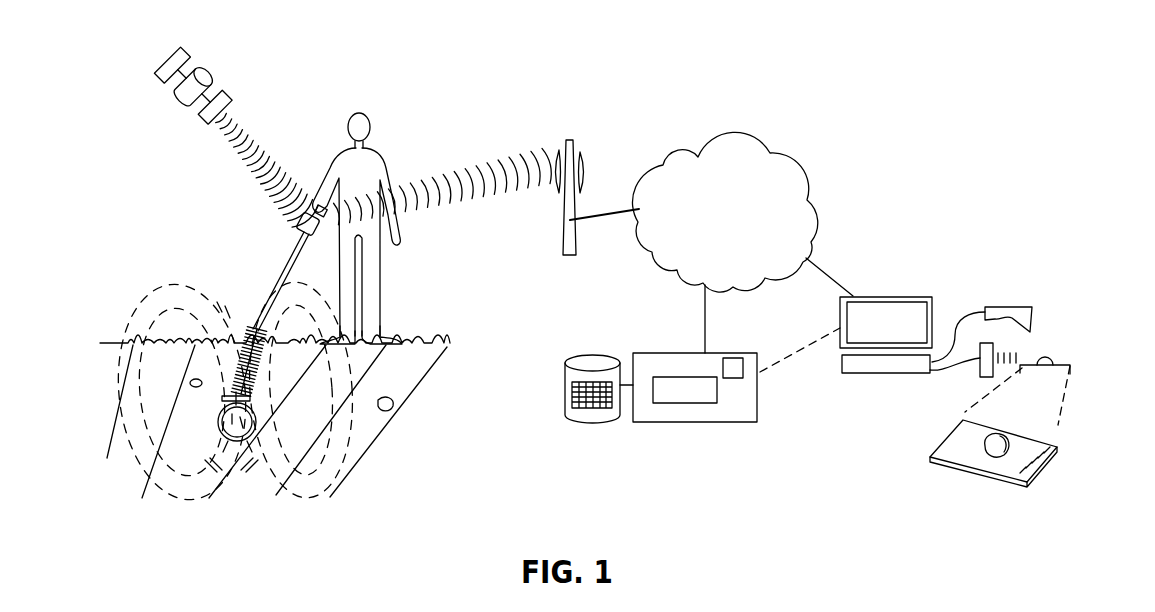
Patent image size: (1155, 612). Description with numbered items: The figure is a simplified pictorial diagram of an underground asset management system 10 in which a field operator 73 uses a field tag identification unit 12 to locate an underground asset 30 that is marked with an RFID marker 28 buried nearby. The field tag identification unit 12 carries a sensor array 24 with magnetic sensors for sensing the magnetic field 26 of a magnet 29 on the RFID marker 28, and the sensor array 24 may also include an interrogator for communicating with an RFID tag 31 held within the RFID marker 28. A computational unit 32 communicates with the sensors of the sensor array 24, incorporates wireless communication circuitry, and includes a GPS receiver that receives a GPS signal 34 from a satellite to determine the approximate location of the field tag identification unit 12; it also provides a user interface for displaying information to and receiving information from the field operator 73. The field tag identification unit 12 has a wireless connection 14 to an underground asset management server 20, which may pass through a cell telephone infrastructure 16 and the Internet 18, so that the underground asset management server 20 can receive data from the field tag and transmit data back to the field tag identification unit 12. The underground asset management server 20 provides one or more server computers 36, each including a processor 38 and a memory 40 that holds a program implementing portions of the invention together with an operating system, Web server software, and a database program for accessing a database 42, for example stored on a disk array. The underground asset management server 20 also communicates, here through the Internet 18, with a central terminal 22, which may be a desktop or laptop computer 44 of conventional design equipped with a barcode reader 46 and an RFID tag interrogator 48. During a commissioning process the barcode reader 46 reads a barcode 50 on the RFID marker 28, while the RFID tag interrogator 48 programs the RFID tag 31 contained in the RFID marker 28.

The underground asset management system 10 is at (800, 133).
The field tag identification unit 12 is at (290, 252).
The wireless connection 14 is at (452, 182).
The cell telephone infrastructure 16 is at (571, 142).
The Internet 18 is at (706, 229).
The underground asset management server 20 is at (566, 445).
The central terminal 22 is at (943, 259).
The sensor array 24 is at (296, 289).
The magnetic field 26 is at (167, 300).
The RFID marker 28 is at (222, 398).
The magnet 29 is at (987, 452).
The underground asset 30 is at (218, 430).
The RFID tag 31 is at (1000, 489).
The computational unit 32 is at (294, 225).
The GPS signal 34 is at (257, 138).
The server computer 36 is at (735, 410).
The processor 38 is at (738, 360).
The memory 40 is at (667, 397).
The database 42 is at (567, 388).
The laptop computer 44 is at (848, 377).
The barcode reader 46 is at (1028, 310).
The RFID tag interrogator 48 is at (980, 381).
The barcode 50 is at (1060, 443).
The field operator 73 is at (372, 291).